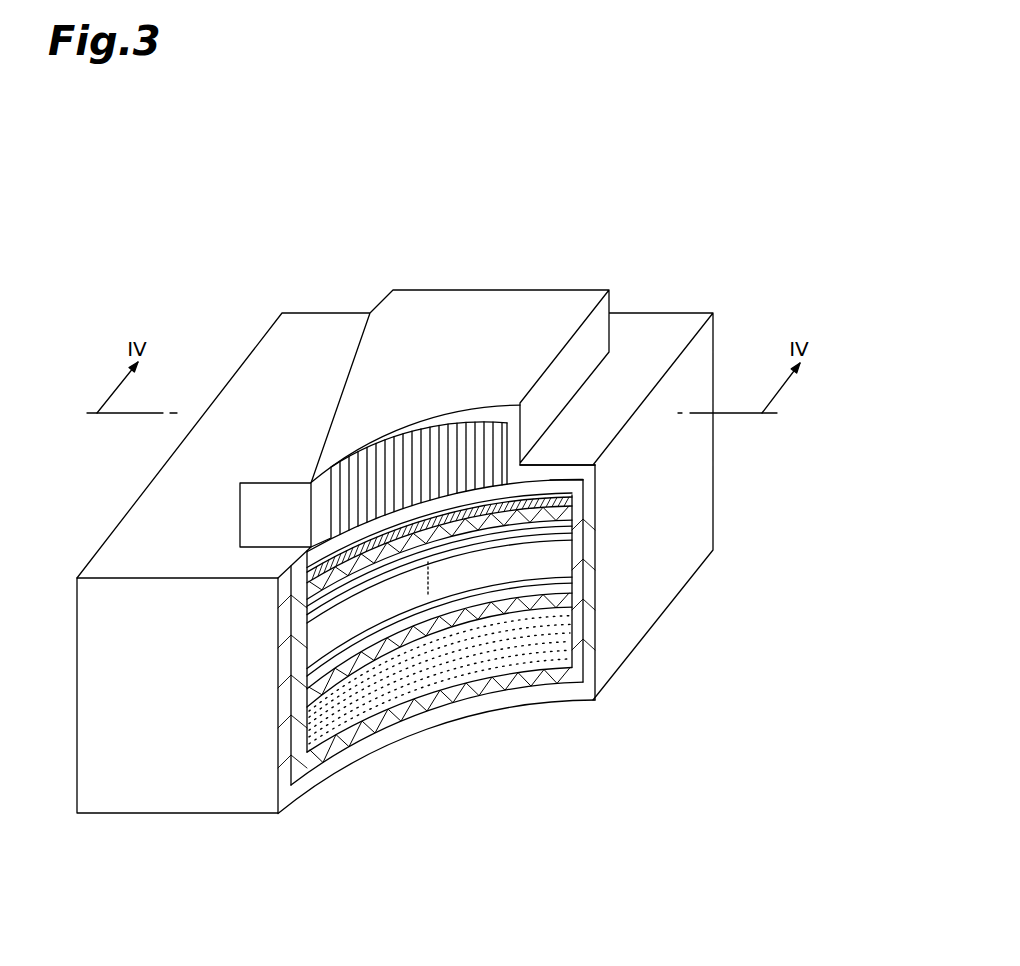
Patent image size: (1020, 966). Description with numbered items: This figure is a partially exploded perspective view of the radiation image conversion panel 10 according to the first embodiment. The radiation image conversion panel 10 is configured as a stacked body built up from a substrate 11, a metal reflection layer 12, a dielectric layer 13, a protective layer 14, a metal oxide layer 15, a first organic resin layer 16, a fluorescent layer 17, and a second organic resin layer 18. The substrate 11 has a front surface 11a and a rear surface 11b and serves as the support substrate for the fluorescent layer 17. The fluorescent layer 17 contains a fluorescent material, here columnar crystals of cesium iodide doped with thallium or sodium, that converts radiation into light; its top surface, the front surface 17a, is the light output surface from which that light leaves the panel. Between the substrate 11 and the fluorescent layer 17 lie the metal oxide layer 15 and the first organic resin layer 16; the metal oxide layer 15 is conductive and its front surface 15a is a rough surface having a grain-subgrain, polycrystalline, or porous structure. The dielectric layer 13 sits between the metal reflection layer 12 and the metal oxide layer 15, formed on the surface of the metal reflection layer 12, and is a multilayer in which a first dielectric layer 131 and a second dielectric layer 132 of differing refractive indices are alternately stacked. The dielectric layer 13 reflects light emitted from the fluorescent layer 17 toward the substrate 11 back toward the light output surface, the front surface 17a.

The radiation image conversion panel 10 is at (665, 185).
The substrate 11 is at (322, 765).
The front surface 11a is at (527, 615).
The rear surface 11b is at (450, 692).
The metal reflection layer 12 is at (361, 660).
The dielectric layer 13 is at (755, 565).
The first dielectric layer 131 is at (572, 525).
The second dielectric layer 132 is at (572, 517).
The protective layer 14 is at (568, 512).
The metal oxide layer 15 is at (568, 494).
The front surface 15a is at (552, 485).
The first organic resin layer 16 is at (552, 483).
The fluorescent layer 17 is at (397, 467).
The front surface 17a is at (487, 425).
The second organic resin layer 18 is at (453, 418).